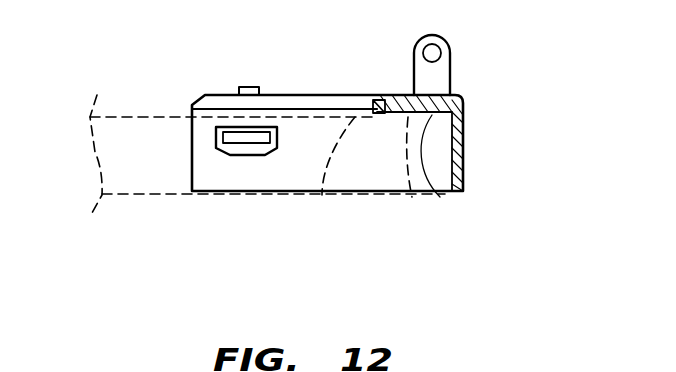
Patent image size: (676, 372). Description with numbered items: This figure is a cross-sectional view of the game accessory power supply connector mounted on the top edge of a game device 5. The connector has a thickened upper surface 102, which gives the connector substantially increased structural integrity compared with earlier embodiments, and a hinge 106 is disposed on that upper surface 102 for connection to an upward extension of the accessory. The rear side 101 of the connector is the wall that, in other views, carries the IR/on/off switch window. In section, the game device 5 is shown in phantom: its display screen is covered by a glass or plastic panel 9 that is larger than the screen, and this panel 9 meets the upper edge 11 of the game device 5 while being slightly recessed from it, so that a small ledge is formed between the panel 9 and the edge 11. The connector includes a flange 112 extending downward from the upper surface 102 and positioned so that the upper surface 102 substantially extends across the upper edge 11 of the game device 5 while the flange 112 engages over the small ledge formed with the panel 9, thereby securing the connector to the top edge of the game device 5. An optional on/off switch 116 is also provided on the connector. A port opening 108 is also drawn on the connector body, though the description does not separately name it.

The game device 5 is at (130, 183).
The panel 9 is at (322, 195).
The upper edge 11 is at (412, 197).
The rear side 101 is at (462, 135).
The upper surface 102 is at (440, 197).
The hinge 106 is at (450, 58).
The connector socket 108 is at (217, 142).
The flange 112 is at (383, 115).
The on/off switch 116 is at (250, 87).